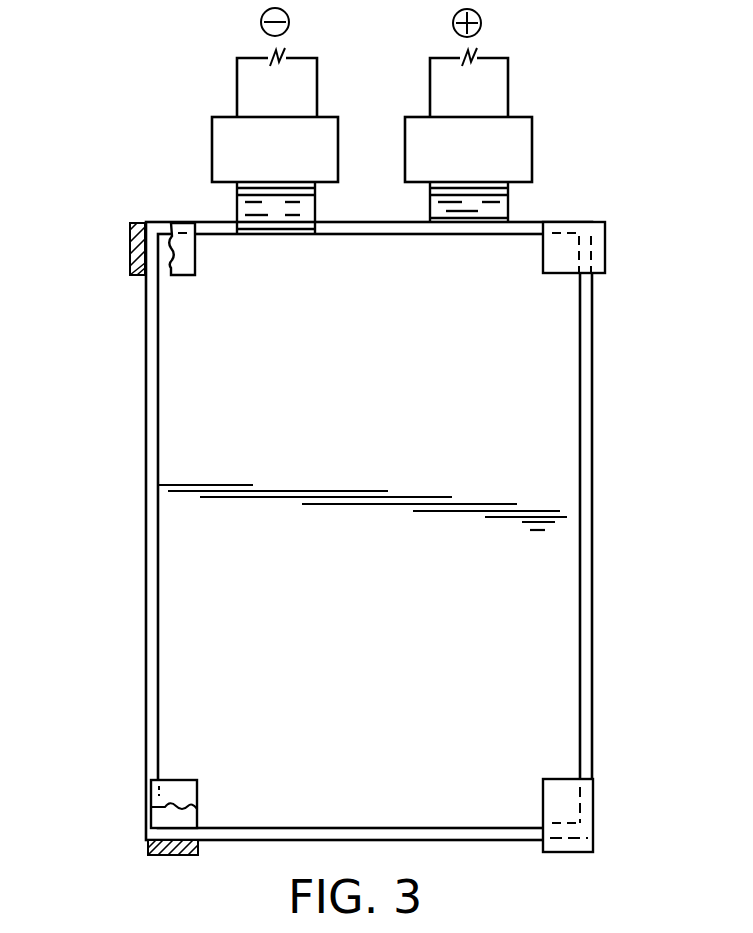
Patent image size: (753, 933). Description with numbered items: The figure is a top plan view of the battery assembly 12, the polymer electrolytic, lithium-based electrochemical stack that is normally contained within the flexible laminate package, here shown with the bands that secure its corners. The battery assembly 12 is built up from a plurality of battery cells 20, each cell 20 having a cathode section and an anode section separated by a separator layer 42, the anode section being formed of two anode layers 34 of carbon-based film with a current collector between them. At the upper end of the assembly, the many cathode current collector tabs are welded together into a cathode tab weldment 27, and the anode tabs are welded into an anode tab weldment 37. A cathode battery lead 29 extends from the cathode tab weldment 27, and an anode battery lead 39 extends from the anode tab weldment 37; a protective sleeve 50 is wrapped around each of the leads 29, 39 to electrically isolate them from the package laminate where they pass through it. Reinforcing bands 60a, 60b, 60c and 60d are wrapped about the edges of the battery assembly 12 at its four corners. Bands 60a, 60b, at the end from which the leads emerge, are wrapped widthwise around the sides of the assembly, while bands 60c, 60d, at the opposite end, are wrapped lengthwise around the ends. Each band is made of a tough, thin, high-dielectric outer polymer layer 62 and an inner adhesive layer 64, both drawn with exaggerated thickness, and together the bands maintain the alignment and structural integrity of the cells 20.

The battery assembly 12 is at (602, 573).
The battery cell 20 is at (186, 567).
The cathode tab weldment 27 is at (502, 203).
The cathode battery lead 29 is at (495, 82).
The anode layer 34 is at (187, 402).
The anode tab weldment 37 is at (237, 202).
The anode battery lead 39 is at (248, 80).
The separator layer 42 is at (147, 467).
The protective sleeve 50 is at (223, 142).
The reinforcing band 60a is at (122, 225).
The reinforcing band 60b is at (614, 238).
The reinforcing band 60c is at (140, 787).
The reinforcing band 60d is at (596, 799).
The outer polymer layer 62 is at (130, 257).
The inner adhesive layer 64 is at (143, 223).